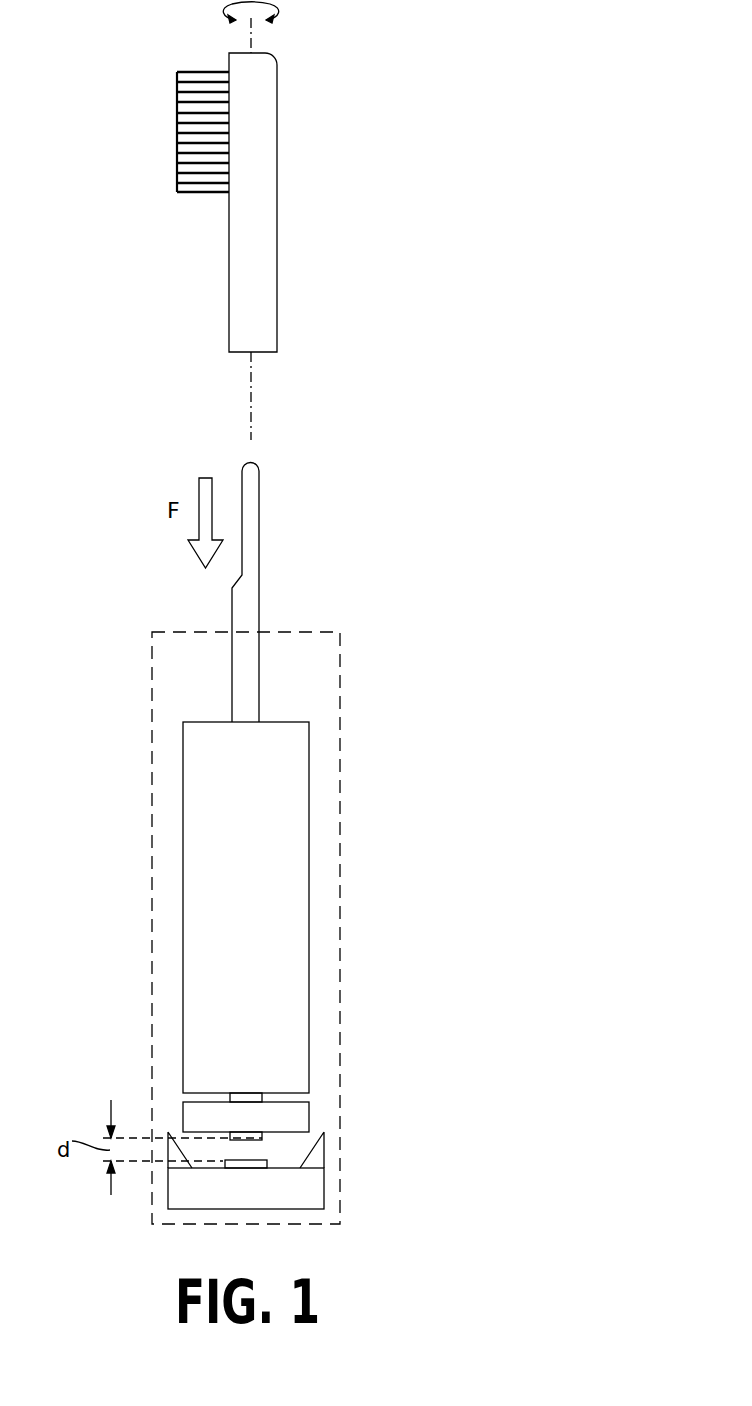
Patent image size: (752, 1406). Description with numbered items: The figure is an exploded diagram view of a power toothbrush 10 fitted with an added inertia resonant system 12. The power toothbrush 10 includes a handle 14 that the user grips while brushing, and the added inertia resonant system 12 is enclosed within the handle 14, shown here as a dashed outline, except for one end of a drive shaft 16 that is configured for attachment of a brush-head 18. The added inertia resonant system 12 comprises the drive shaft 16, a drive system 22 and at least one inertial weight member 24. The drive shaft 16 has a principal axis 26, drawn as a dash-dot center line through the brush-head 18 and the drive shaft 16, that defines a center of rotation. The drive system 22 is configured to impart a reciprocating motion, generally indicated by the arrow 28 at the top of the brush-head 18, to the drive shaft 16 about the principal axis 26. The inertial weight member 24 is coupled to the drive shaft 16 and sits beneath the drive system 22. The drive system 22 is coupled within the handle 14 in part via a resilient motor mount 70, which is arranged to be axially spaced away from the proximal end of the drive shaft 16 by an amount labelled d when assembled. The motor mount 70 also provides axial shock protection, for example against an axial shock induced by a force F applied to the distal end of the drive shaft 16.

The power toothbrush 10 is at (425, 132).
The added inertia resonant system 12 is at (428, 667).
The handle 14 is at (340, 867).
The drive shaft 16 is at (252, 519).
The brush-head 18 is at (277, 200).
The drive system 22 is at (297, 1005).
The inertial weight member 24 is at (297, 1117).
The principal axis 26 is at (251, 413).
The arrow indicating reciprocating motion 28 is at (280, 13).
The resilient motor mount 70 is at (308, 1188).